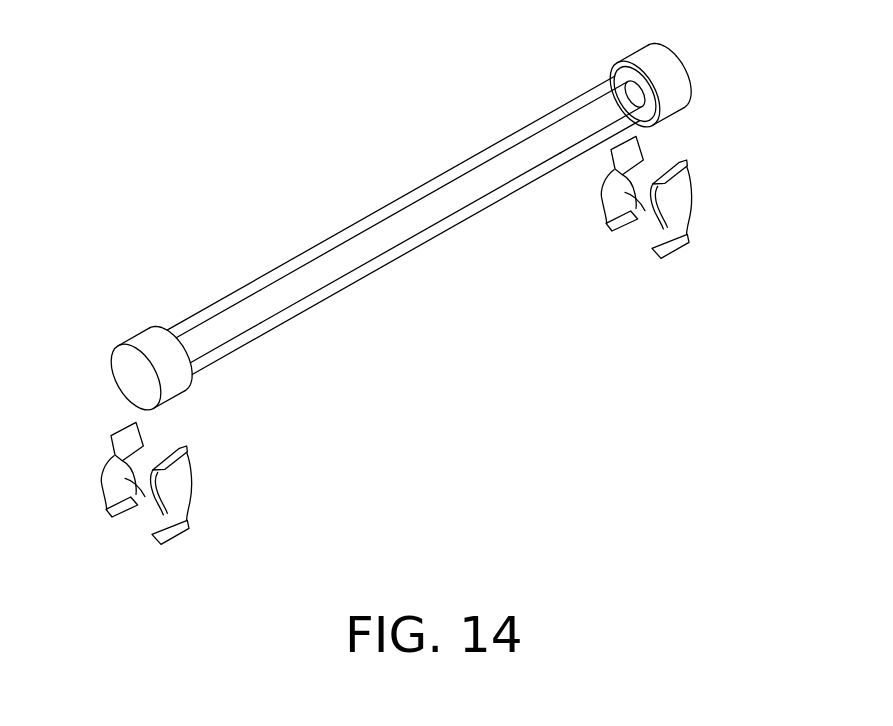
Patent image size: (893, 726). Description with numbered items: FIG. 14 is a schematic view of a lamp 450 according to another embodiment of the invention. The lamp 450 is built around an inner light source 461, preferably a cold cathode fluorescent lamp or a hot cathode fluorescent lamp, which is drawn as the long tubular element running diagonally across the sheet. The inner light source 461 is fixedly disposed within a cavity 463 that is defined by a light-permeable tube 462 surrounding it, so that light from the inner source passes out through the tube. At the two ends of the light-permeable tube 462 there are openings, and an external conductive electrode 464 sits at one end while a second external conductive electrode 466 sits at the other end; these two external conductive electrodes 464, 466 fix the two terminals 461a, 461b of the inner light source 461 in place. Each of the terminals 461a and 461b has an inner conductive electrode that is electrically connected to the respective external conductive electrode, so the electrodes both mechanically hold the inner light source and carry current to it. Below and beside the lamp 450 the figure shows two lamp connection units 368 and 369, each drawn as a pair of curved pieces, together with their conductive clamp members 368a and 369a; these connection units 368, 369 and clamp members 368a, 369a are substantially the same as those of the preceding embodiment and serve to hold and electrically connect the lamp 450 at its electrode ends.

The lamp 450 is at (502, 137).
The inner light source 461 is at (421, 196).
The terminal of the inner light source 461a is at (195, 343).
The terminal of the inner light source 461b is at (622, 101).
The light-permeable tube 462 is at (337, 232).
The cavity 463 is at (357, 275).
The external conductive electrode 464 is at (150, 340).
The external conductive electrode 466 is at (677, 78).
The first clip 368 is at (197, 487).
The clip half of first clip 368a is at (132, 481).
The second clip 369 is at (697, 203).
The clip half of second clip 369a is at (632, 195).